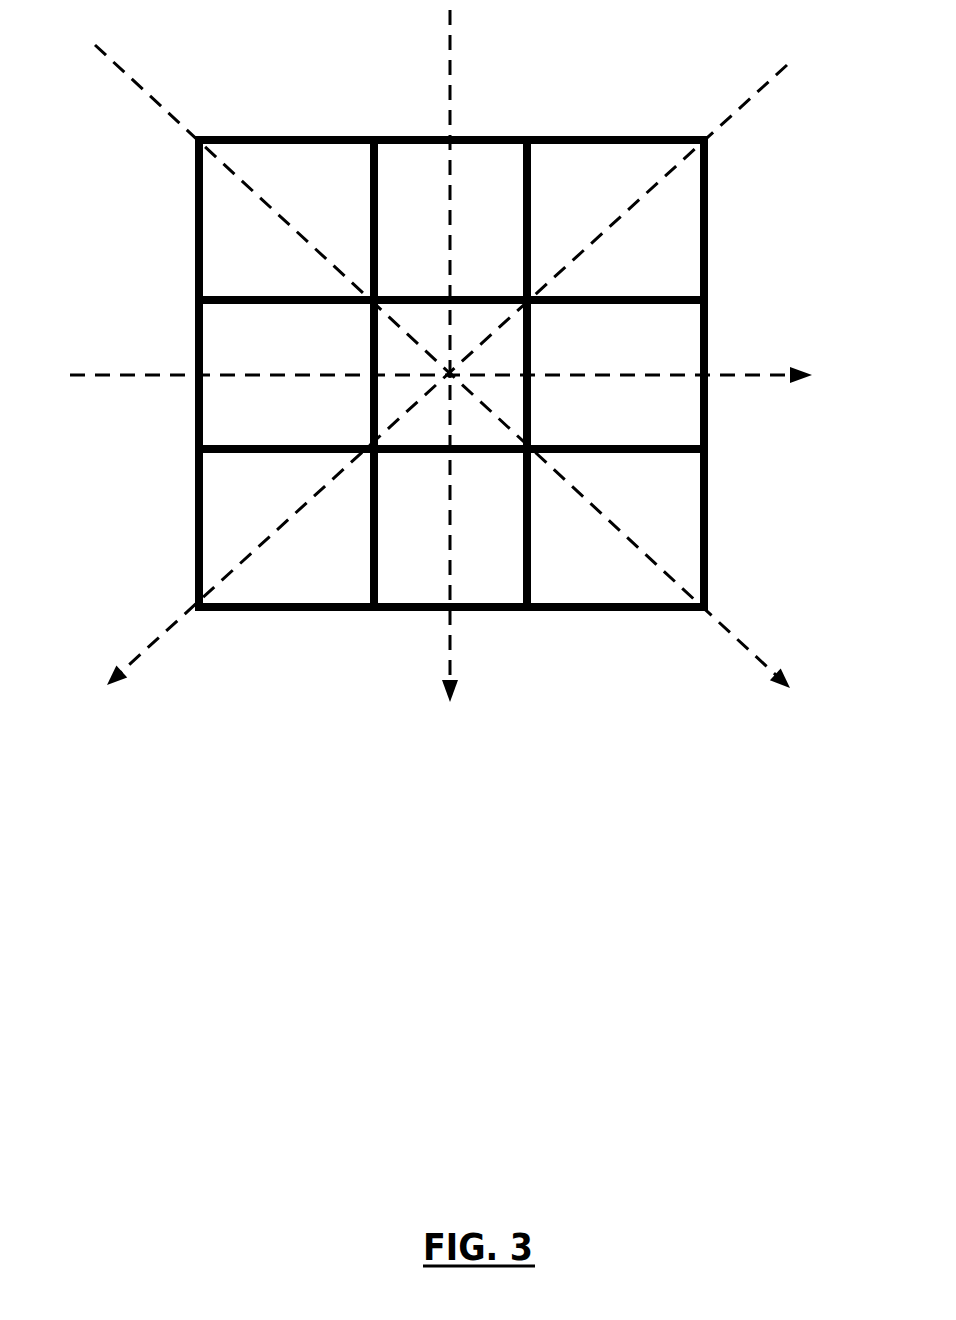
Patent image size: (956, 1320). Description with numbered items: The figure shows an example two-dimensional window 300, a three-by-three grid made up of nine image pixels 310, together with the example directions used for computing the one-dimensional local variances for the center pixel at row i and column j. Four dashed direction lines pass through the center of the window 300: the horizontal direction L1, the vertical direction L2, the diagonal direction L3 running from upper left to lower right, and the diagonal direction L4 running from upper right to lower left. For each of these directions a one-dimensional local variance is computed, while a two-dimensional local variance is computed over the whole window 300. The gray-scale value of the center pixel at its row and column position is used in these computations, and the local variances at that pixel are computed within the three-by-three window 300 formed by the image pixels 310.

The two-dimensional window 300 is at (463, 895).
The image pixels 310 is at (248, 240).
The horizontal direction L1 is at (470, 366).
The vertical direction L2 is at (455, 377).
The diagonal direction from upper left to lower right L3 is at (467, 395).
The diagonal direction from upper right to lower left L4 is at (420, 400).